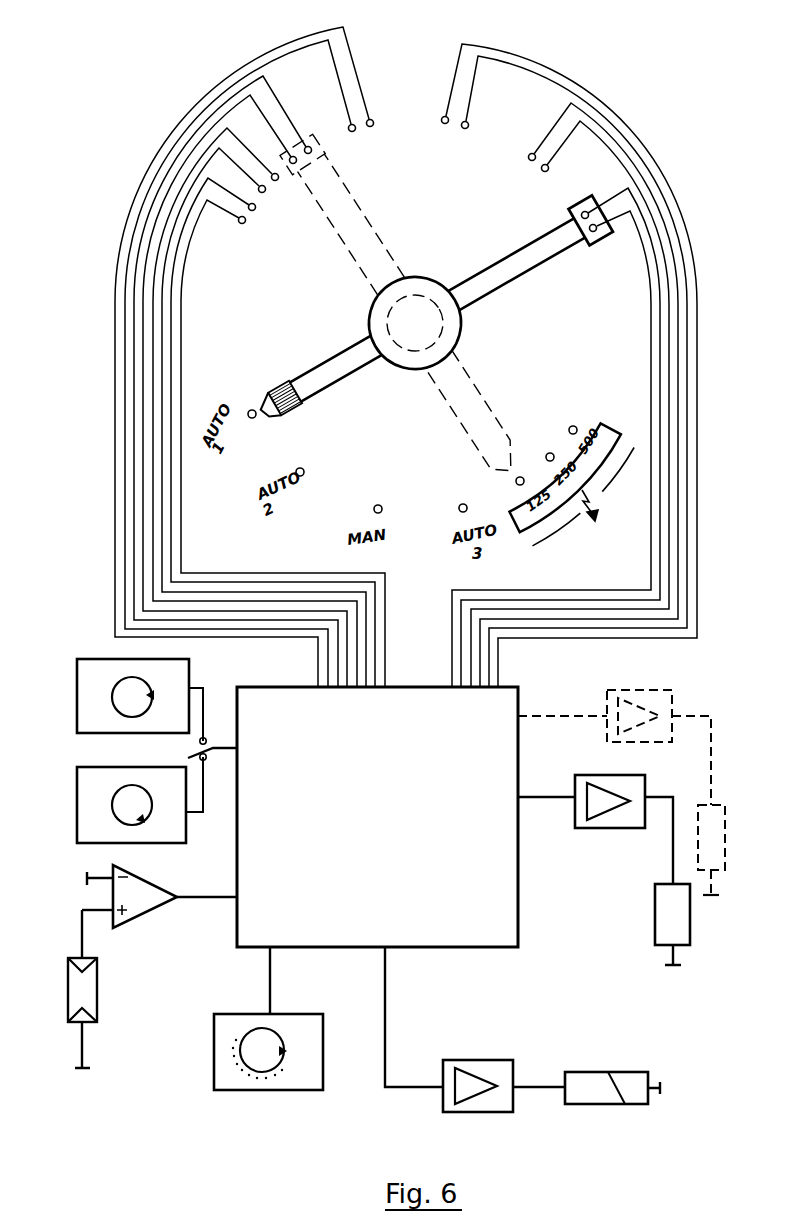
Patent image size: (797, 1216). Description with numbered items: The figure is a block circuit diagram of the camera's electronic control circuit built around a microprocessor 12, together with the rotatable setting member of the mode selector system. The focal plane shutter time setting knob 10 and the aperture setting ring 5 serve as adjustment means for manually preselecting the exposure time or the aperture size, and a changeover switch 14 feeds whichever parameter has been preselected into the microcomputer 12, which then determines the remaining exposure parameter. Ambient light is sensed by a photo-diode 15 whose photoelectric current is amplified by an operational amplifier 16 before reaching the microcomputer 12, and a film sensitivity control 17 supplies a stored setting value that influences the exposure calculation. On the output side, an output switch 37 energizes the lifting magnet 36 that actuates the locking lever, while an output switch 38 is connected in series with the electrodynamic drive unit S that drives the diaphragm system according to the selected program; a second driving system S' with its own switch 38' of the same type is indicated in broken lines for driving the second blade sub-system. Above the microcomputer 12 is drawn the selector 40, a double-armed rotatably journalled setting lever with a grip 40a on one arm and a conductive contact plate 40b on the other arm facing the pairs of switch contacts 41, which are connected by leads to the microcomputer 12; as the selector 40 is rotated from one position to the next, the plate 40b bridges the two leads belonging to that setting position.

The focal plane shutter time setting knob 10 is at (88, 670).
The aperture setting ring 5 is at (93, 780).
The changeover switch 14 is at (213, 746).
The microprocessor 12 is at (377, 817).
The operational amplifier 16 is at (147, 898).
The photo-diode 15 is at (87, 987).
The control 17 is at (292, 1082).
The output switch 37 is at (483, 1060).
The lifting magnet 36 is at (625, 1100).
The output switch 38 is at (595, 829).
The switch 38' is at (619, 740).
The electrodynamic drive unit S is at (686, 924).
The electrodynamic driving system S' is at (731, 850).
The selector 40 is at (522, 252).
The grip 40a is at (285, 380).
The contact plate 40b is at (593, 240).
The switch contacts 41 is at (246, 221).